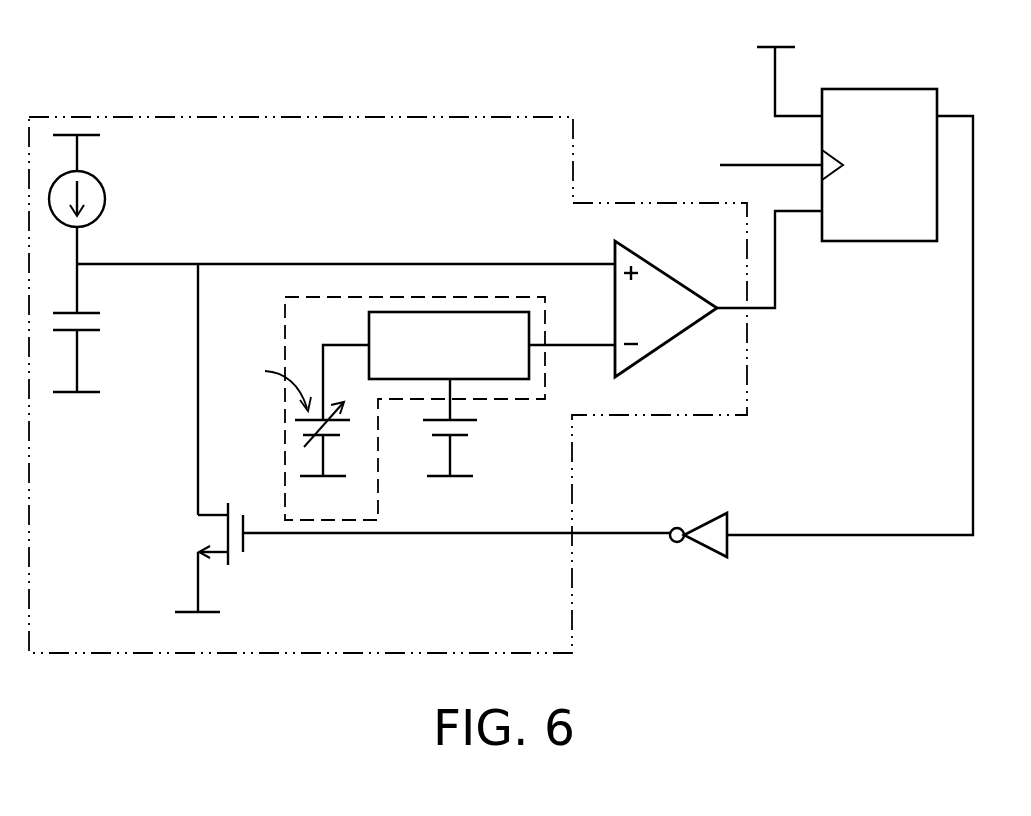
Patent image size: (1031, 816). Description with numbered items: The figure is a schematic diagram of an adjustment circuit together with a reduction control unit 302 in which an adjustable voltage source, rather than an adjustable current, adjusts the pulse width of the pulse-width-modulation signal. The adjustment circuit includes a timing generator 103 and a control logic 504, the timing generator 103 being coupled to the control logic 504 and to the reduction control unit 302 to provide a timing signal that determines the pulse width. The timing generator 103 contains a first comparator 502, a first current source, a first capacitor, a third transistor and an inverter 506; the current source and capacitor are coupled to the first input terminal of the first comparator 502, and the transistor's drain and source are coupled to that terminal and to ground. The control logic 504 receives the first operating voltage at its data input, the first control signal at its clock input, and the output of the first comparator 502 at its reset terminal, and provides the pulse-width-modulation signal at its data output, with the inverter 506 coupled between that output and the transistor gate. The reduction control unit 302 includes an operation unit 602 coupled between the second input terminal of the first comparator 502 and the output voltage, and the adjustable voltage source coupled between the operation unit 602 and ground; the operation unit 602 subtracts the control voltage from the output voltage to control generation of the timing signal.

The timing generator 103 is at (486, 117).
The reduction control unit 302 is at (334, 297).
The operation unit 602 is at (426, 312).
The first comparator 502 is at (666, 270).
The control logic 504 is at (880, 89).
The inverter 506 is at (704, 549).